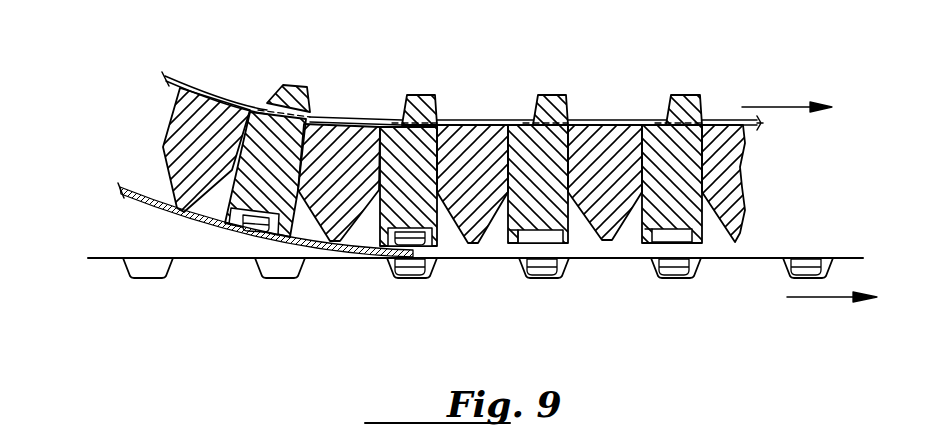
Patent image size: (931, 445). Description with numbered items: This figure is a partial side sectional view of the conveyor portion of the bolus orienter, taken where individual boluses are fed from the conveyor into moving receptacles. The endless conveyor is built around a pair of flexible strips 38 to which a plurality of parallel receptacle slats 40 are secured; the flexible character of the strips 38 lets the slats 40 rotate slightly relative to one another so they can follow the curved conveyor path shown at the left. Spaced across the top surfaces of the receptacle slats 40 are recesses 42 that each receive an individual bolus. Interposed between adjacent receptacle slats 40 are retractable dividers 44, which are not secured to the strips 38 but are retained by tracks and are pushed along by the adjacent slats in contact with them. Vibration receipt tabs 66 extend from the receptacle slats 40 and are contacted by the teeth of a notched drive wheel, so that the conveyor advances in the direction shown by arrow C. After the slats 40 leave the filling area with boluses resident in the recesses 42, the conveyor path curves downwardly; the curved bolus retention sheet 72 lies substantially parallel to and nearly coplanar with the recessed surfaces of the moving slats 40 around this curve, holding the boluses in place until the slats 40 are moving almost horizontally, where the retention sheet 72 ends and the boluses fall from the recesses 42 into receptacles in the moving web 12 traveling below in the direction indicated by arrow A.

The web 12 is at (486, 261).
The flexible strips 38 is at (178, 68).
The receptacle slats 40 is at (542, 157).
The recesses 42 is at (552, 234).
The retractable dividers 44 is at (355, 172).
The vibration receipt tabs 66 is at (423, 95).
The bolus retention sheet 72 is at (157, 208).
The direction arrow A is at (822, 298).
The direction of conveyor travel C is at (772, 107).